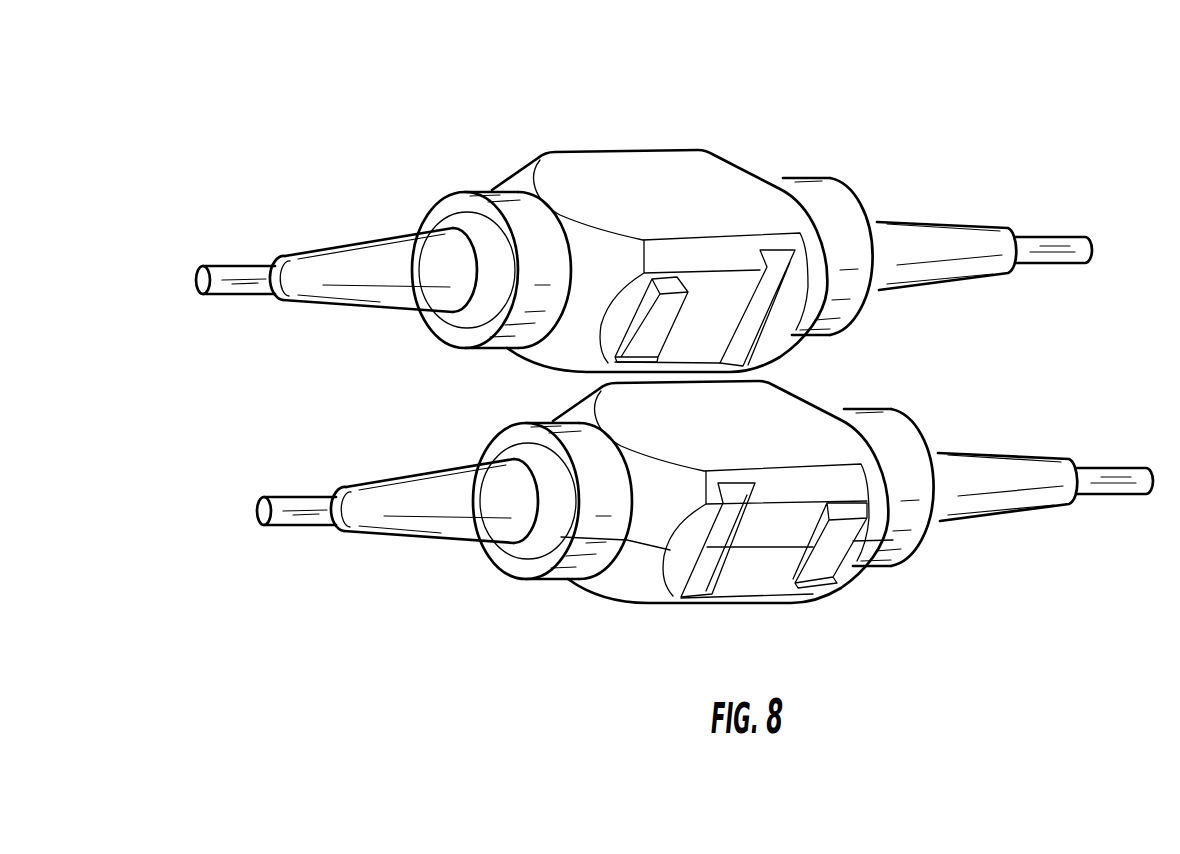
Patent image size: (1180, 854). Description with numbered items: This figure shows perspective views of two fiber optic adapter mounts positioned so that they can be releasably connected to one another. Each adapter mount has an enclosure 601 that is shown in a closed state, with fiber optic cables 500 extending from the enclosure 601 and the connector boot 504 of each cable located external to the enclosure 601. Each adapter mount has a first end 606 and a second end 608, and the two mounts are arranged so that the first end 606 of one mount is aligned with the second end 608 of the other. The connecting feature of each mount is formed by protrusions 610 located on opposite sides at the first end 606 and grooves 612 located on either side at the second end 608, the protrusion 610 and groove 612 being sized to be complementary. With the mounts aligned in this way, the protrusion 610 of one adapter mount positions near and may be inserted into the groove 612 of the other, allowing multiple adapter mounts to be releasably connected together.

The fiber optic cable 500 is at (235, 262).
The connector boot 504 is at (353, 240).
The enclosure 601 is at (748, 170).
The first end 606 is at (477, 190).
The second end 608 is at (861, 197).
The protrusion 610 is at (672, 287).
The groove 612 is at (777, 262).